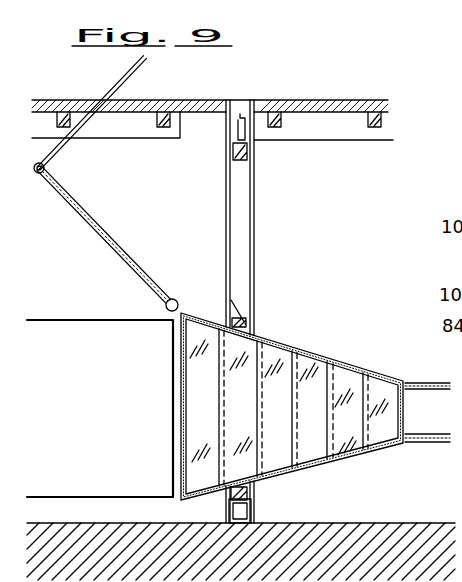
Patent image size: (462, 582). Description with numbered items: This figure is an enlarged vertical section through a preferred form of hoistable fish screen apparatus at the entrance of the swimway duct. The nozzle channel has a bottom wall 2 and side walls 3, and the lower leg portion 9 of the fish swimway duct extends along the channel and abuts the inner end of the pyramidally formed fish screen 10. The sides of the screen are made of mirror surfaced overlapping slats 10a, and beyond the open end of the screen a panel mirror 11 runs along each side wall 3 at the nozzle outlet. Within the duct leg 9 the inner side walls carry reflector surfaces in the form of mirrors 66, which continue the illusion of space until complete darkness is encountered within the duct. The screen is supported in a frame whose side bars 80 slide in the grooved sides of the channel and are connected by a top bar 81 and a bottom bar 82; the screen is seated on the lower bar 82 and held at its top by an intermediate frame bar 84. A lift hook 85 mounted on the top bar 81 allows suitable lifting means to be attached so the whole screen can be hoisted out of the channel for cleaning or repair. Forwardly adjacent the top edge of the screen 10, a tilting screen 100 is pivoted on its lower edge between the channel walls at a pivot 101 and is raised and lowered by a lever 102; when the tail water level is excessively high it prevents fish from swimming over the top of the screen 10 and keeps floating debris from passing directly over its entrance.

The bottom wall 2 is at (253, 548).
The side wall 3 is at (190, 222).
The lower leg portion 9 is at (434, 445).
The fish screen 10 is at (292, 396).
The mirror surfaced overlapping slats 10a is at (380, 387).
The panel mirror 11 is at (97, 330).
The mirror 66 is at (435, 392).
The side bar 80 is at (243, 512).
The top bar 81 is at (233, 151).
The bottom bar 82 is at (249, 492).
The intermediate frame bar 84 is at (229, 293).
The lift hook 85 is at (252, 112).
The tilting screen 100 is at (93, 228).
The pivot 101 is at (166, 305).
The lever 102 is at (53, 161).